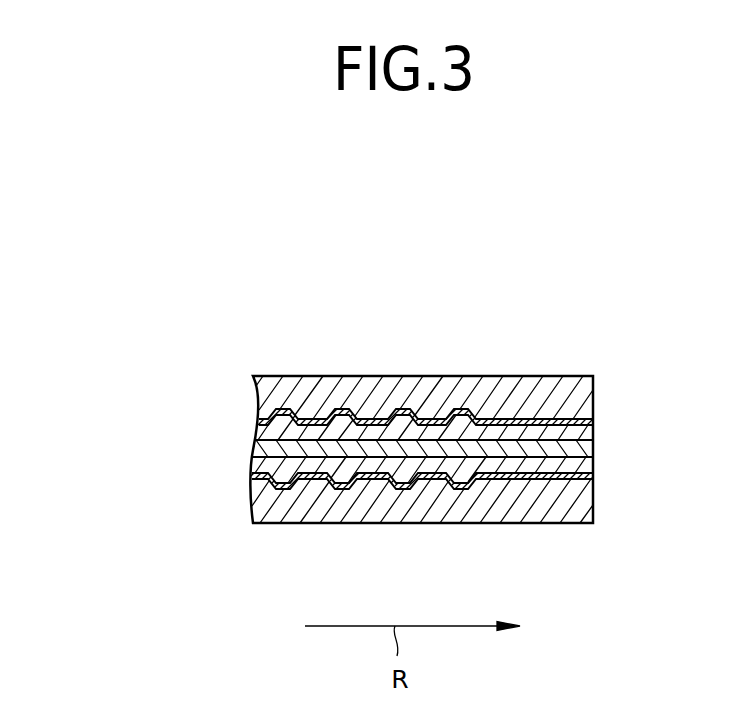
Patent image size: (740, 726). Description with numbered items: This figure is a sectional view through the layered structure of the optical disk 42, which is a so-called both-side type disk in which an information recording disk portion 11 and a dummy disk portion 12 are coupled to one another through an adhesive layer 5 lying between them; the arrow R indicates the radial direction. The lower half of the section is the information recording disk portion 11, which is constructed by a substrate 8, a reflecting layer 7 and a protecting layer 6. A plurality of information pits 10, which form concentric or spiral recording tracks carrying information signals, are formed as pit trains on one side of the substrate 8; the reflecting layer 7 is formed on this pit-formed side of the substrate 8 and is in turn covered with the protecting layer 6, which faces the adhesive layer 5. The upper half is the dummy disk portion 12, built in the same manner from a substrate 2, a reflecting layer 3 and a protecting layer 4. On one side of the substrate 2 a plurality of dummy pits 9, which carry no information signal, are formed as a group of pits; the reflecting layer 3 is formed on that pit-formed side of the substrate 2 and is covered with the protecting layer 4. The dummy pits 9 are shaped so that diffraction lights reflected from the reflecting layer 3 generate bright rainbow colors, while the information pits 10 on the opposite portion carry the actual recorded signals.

The optical disk 42 is at (382, 356).
The substrate 2 is at (512, 374).
The reflecting layer 3 is at (594, 422).
The protecting layer 4 is at (594, 433).
The adhesive layer 5 is at (594, 450).
The protecting layer 6 is at (594, 464).
The reflecting layer 7 is at (594, 478).
The substrate 8 is at (510, 508).
The dummy pits 9 is at (286, 410).
The information pits 10 is at (285, 490).
The information recording disk portion 11 is at (246, 520).
The dummy disk portion 12 is at (246, 437).